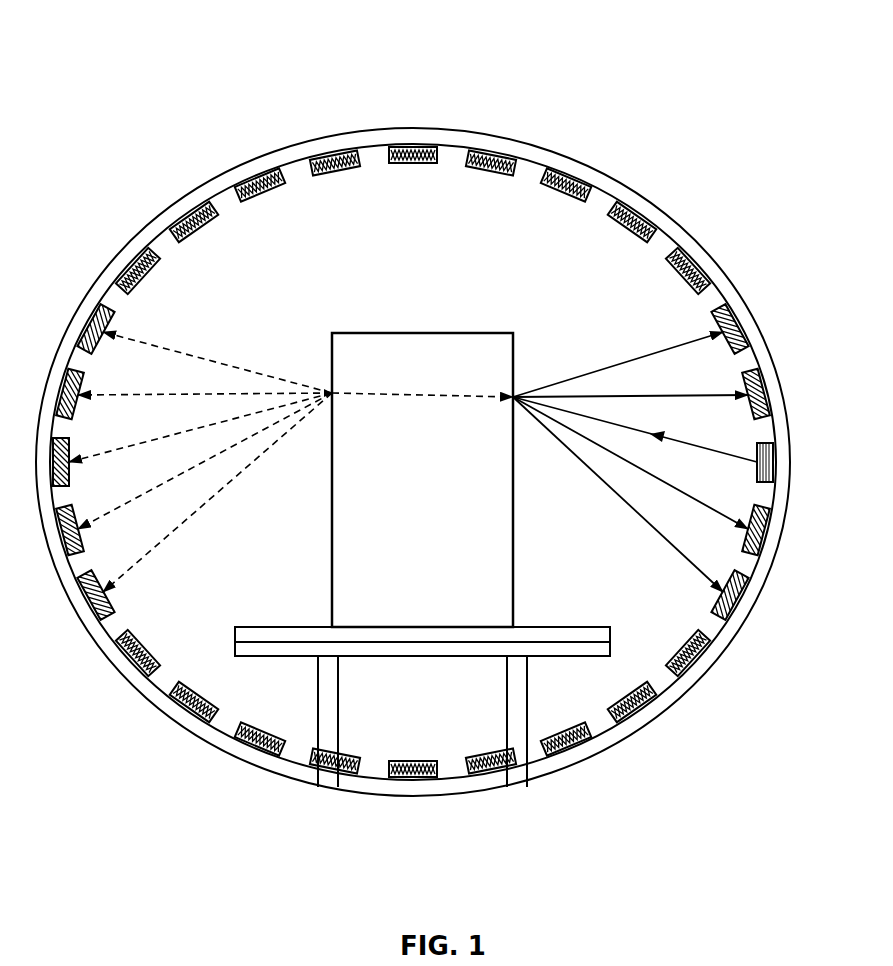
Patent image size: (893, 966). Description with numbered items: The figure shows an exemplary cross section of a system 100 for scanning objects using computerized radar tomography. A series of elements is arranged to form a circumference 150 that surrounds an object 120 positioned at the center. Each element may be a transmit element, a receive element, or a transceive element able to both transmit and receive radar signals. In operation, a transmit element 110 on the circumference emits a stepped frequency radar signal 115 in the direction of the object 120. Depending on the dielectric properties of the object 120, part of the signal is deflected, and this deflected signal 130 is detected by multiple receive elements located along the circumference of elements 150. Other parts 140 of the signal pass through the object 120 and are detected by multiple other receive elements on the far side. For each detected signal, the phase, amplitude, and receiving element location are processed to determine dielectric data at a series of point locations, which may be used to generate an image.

The system 100 is at (127, 44).
The transmit element 110 is at (849, 447).
The stepped frequency radar signal 115 is at (735, 432).
The object 120 is at (422, 333).
The deflected signal 130 is at (657, 347).
The parts of the signal 140 is at (164, 346).
The circumference of elements 150 is at (686, 171).